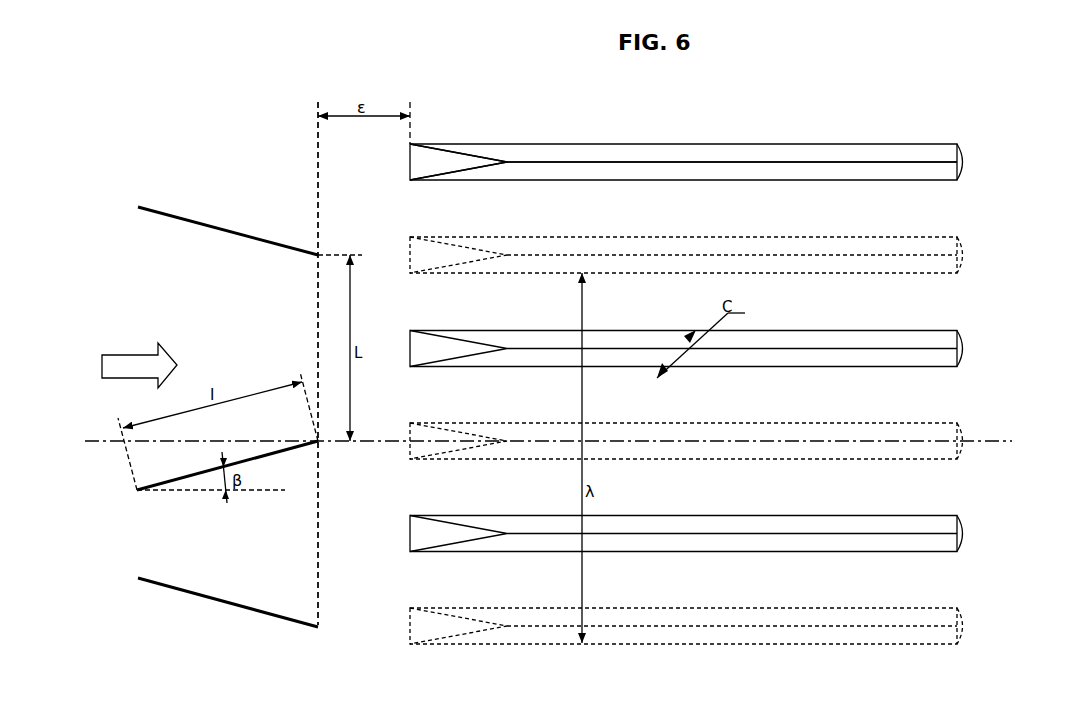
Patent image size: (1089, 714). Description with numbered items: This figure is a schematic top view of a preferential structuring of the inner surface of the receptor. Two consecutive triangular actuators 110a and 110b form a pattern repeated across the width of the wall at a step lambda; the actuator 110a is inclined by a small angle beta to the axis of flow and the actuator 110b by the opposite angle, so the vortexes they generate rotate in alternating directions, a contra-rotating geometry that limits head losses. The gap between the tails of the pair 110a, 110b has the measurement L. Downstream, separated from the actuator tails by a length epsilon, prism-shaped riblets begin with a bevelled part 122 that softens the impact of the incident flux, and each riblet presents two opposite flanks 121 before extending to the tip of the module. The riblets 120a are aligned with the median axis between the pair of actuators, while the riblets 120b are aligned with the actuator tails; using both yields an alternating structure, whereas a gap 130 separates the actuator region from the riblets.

The actuator 110a is at (221, 230).
The actuator 110b is at (283, 452).
The riblet 120a is at (963, 173).
The riblet 120b is at (963, 265).
The flank 121 is at (585, 172).
The bevelled part 122 is at (418, 163).
The gap 130 is at (416, 210).